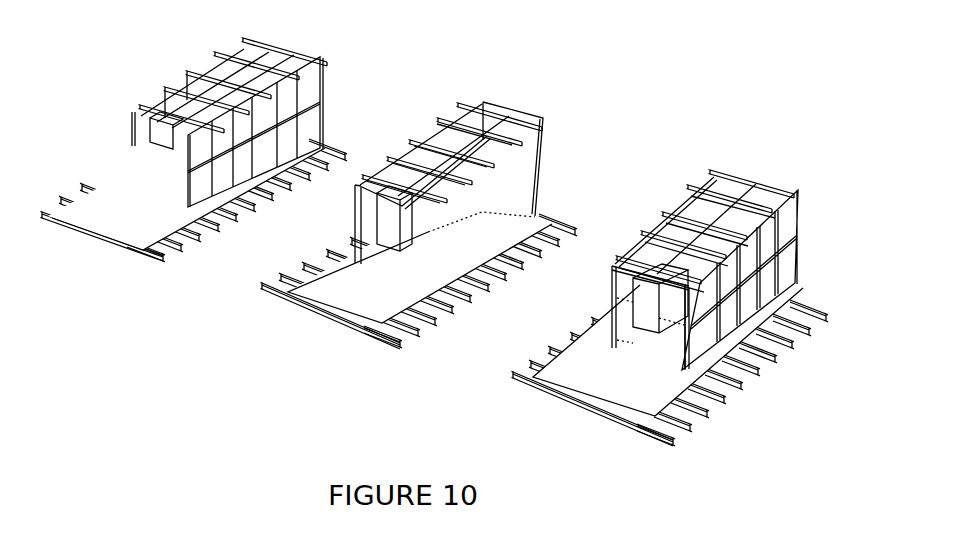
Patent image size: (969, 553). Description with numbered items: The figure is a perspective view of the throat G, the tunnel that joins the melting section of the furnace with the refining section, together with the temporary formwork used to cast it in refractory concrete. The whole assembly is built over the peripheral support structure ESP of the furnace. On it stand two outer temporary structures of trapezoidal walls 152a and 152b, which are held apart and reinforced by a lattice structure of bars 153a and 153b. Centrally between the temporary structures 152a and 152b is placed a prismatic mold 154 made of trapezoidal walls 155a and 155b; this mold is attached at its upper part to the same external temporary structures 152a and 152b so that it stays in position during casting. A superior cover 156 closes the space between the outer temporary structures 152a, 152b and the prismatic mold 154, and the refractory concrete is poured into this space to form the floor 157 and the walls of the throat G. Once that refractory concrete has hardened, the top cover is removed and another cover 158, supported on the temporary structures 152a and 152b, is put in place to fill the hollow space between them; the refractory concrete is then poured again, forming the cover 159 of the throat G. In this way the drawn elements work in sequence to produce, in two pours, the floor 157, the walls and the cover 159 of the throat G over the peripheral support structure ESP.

The throat G is at (140, 64).
The outer temporary structure of trapezoidal walls 152a is at (360, 222).
The outer temporary structure of trapezoidal walls 152b is at (307, 73).
The lattice structure of bars 153a is at (688, 287).
The lattice structure of bars 153b is at (700, 318).
The prismatic mold 154 is at (383, 236).
The trapezoidal wall of prismatic mold 155a is at (395, 163).
The trapezoidal wall of prismatic mold 155b is at (503, 145).
The superior cover 156 is at (417, 225).
The floor of the throat 157 is at (630, 347).
The cover 158 is at (632, 270).
The cover of the throat 159 is at (652, 297).
The peripheral support structure ESP is at (380, 351).